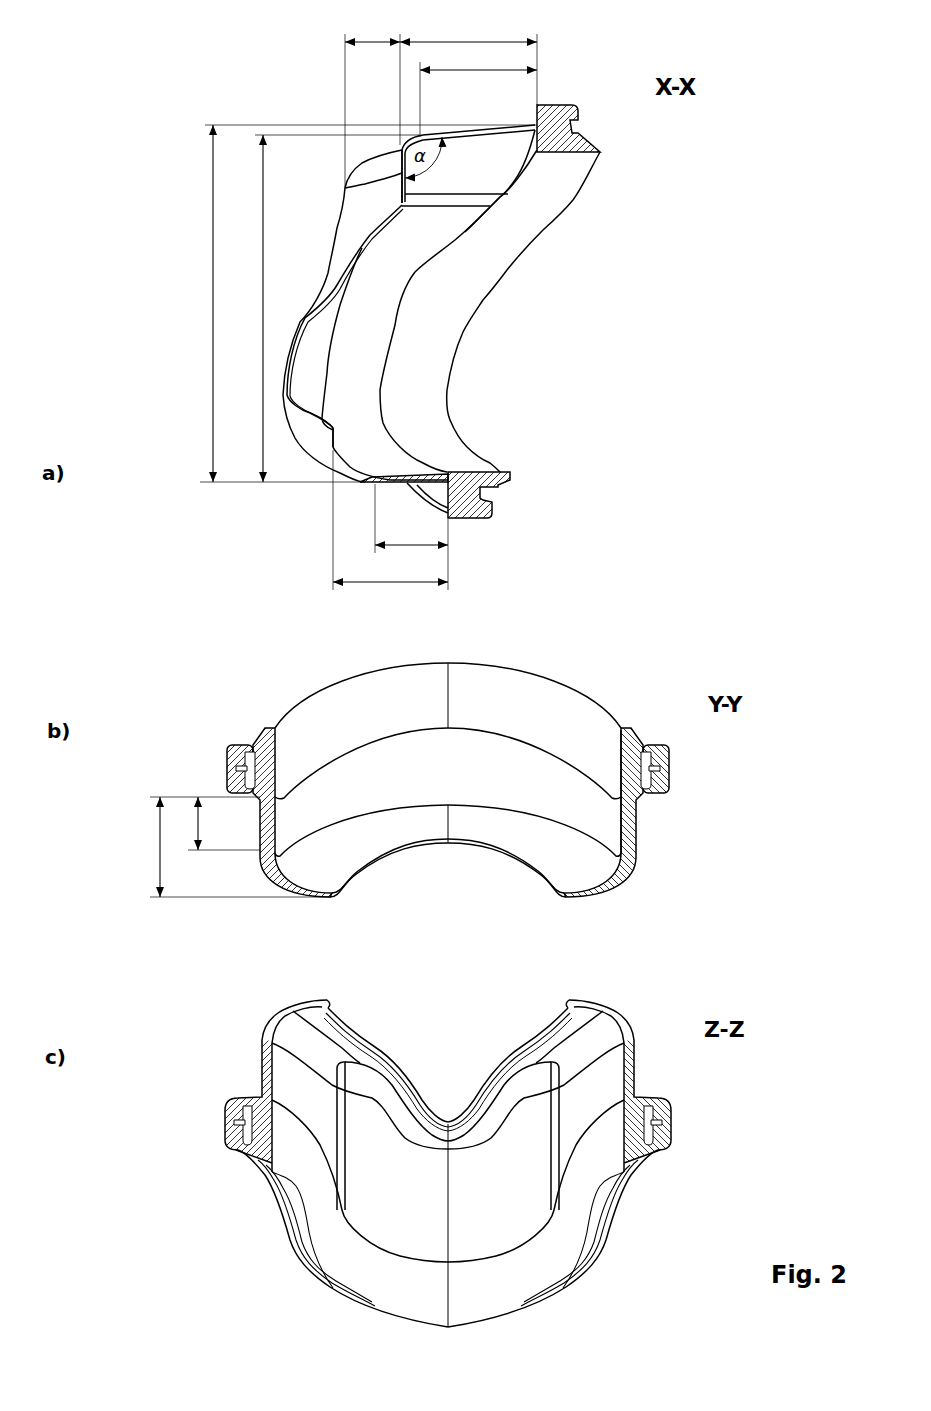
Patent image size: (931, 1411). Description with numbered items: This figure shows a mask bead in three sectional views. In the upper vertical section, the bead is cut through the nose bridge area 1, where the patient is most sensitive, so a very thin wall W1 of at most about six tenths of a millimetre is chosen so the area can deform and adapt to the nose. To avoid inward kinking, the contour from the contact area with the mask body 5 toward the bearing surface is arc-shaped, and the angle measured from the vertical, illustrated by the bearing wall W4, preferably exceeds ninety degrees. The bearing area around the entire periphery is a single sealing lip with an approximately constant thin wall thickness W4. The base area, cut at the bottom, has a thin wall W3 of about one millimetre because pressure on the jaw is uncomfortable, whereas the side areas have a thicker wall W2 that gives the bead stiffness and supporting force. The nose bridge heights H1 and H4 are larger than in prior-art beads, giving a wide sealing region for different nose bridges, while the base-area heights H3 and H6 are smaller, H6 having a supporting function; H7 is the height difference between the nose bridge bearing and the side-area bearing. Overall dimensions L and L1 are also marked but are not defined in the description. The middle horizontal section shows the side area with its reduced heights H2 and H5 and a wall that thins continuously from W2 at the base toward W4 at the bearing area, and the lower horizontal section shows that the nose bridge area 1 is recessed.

The nose bridge area 1 is at (438, 1115).
The mask body 5 is at (550, 127).
The height in the nose bridge area H1 is at (468, 83).
The height in the nose bridge area H4 is at (478, 93).
The height difference between nose bridge bearing and side-area bearing H7 is at (372, 104).
The length L is at (361, 303).
The length L1 is at (328, 308).
The height of the base area H6 is at (411, 537).
The height of the base area H3 is at (390, 520).
The wall thickness in the nose bridge area W1 is at (470, 130).
The wall thickness of the bearing area W4 is at (405, 176).
The wall thickness of the base area W3 is at (413, 477).
The wall thickness of the side areas W2 is at (630, 825).
The height of the side area H2 is at (233, 847).
The height of the side area H5 is at (217, 823).